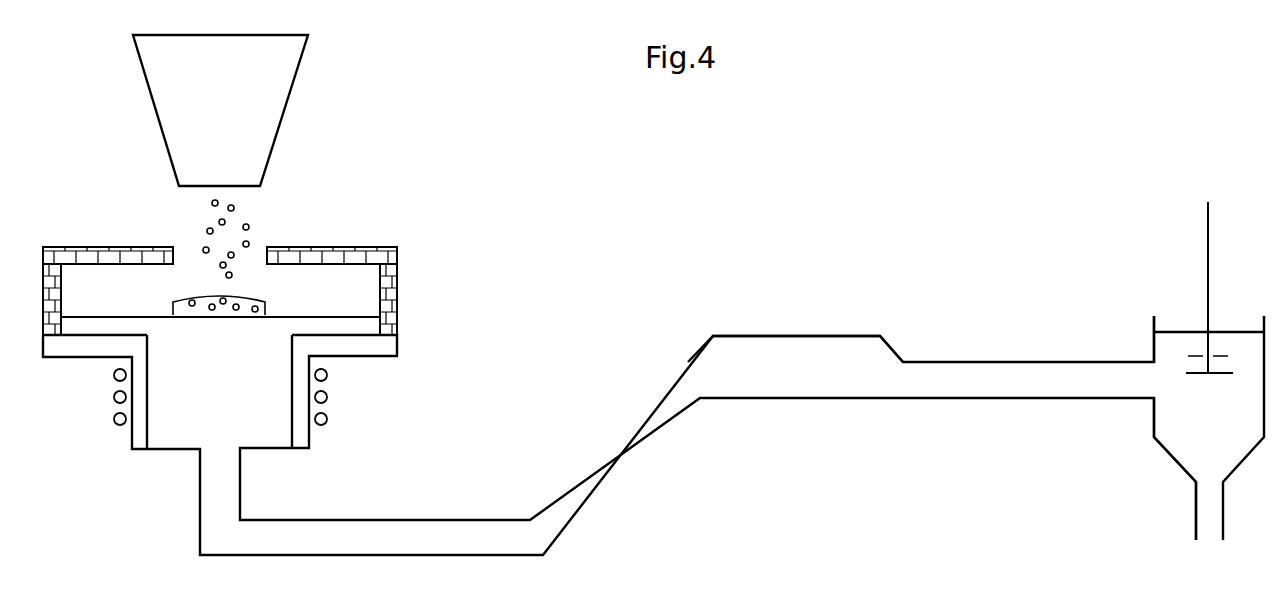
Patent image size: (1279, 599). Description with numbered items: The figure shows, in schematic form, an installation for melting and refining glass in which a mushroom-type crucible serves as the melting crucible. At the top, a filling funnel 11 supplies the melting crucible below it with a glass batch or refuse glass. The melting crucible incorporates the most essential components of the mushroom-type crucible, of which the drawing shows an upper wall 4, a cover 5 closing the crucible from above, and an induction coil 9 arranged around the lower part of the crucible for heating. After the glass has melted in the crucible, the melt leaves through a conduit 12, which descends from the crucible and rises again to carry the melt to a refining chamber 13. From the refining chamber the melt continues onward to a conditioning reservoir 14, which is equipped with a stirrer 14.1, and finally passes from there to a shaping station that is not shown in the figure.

The upper wall 4 is at (397, 298).
The cover 5 is at (353, 245).
The induction coil 9 is at (328, 377).
The filling funnel 11 is at (276, 108).
The conduit 12 is at (390, 523).
The refining chamber 13 is at (720, 332).
The conditioning reservoir 14 is at (1154, 424).
The stirrer 14.1 is at (1208, 230).